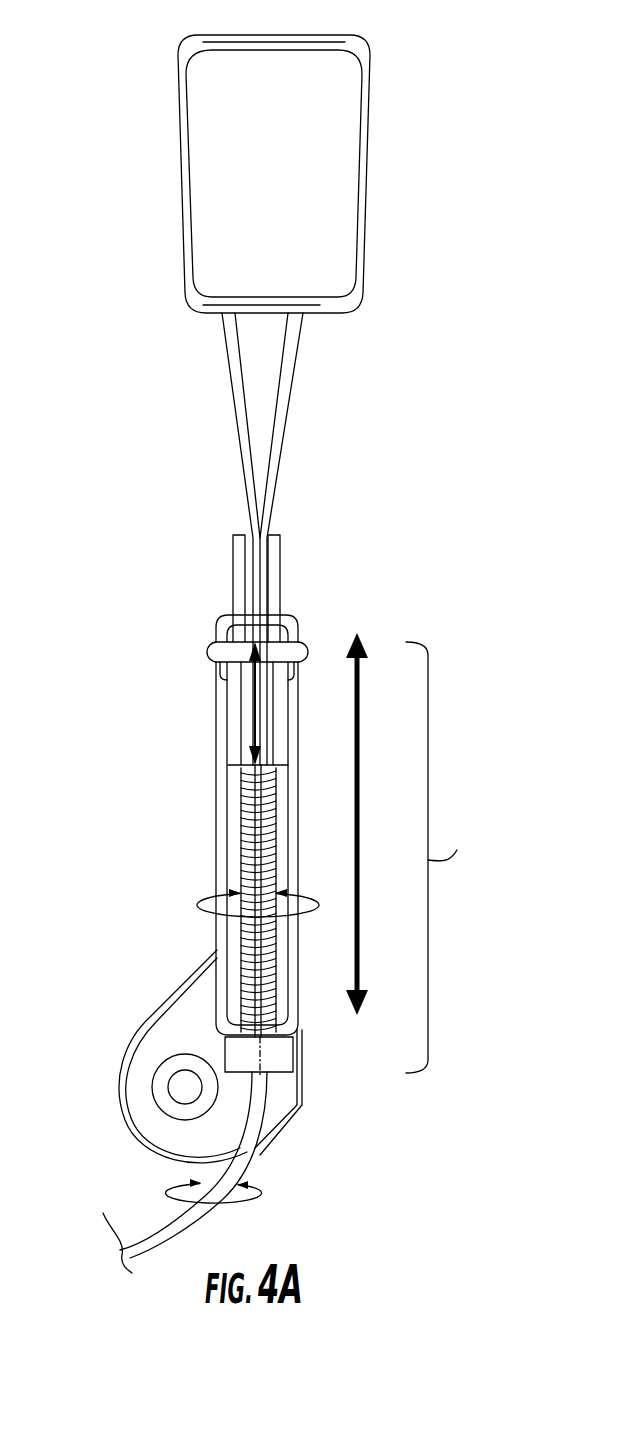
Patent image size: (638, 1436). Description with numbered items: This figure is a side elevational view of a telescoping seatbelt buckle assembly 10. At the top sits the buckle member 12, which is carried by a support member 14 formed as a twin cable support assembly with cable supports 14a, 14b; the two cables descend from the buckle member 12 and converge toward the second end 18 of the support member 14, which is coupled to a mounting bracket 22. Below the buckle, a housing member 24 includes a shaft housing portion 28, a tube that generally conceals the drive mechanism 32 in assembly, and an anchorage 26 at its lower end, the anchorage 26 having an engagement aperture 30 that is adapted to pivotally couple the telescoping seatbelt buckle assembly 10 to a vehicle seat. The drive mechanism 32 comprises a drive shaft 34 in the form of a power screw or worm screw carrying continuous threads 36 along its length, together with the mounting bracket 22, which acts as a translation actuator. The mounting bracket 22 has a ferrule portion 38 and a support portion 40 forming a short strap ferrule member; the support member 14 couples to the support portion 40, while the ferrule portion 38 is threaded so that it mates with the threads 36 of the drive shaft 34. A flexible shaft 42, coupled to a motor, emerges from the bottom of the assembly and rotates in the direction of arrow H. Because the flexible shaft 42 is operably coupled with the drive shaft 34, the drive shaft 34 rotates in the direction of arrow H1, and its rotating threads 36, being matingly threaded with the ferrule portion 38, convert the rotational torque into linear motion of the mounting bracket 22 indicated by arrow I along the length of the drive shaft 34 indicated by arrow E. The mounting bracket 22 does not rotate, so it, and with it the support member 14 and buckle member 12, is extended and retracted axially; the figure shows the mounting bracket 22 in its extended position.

The telescoping seatbelt buckle assembly 10 is at (100, 297).
The buckle member 12 is at (372, 180).
The support member 14 is at (287, 424).
The cable support 14a is at (291, 390).
The cable support 14b is at (231, 380).
The second end 18 is at (243, 580).
The mounting bracket 22 is at (230, 731).
The housing member 24 is at (215, 834).
The anchorage 26 is at (143, 1083).
The shaft housing portion 28 is at (217, 782).
The engagement aperture 30 is at (183, 1085).
The drive mechanism 32 is at (437, 857).
The drive shaft 34 is at (276, 850).
The threads 36 is at (245, 945).
The ferrule portion 38 is at (235, 688).
The support portion 40 is at (280, 560).
The flexible shaft 42 is at (250, 1158).
The arrow E is at (360, 719).
The arrow I is at (260, 700).
The arrow H is at (255, 1198).
The arrow H1 is at (280, 920).